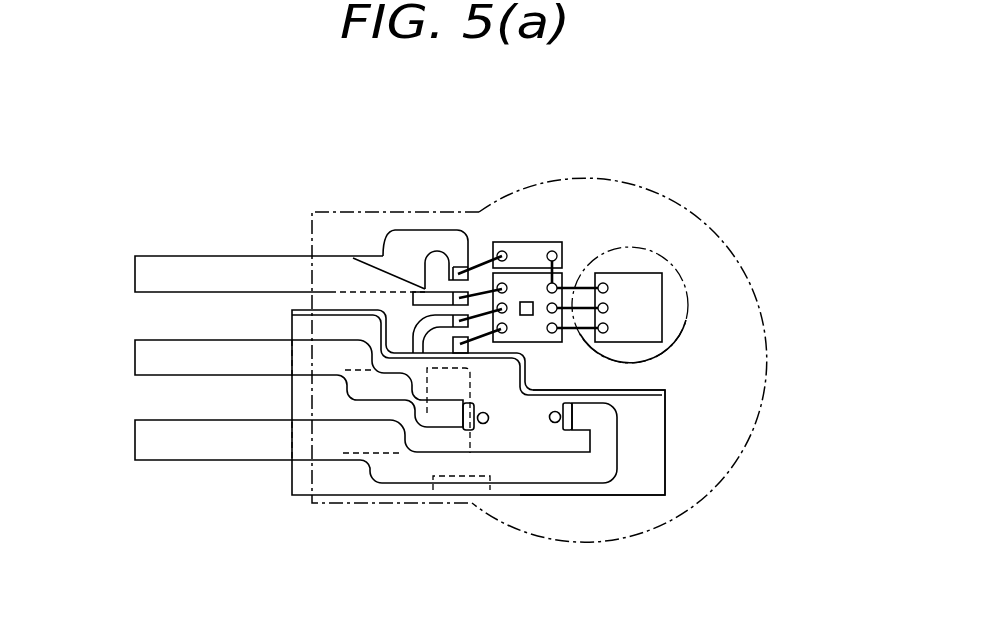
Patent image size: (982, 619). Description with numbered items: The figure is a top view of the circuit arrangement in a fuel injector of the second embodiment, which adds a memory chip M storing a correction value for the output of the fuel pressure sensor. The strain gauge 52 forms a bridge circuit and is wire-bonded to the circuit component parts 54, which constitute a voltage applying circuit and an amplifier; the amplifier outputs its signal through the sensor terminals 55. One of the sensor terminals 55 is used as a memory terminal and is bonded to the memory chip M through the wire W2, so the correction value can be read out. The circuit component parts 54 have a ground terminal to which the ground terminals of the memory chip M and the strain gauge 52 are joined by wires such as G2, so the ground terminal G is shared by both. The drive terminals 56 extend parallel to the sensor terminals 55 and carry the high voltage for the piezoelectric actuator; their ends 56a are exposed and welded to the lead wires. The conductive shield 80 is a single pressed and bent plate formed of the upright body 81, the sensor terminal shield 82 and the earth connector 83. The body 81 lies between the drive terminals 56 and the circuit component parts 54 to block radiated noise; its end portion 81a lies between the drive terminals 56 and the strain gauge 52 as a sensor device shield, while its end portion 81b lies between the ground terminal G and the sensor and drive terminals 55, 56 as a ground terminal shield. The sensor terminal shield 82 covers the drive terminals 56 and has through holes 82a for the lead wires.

The conductive shield 80 is at (290, 491).
The upright body 81 is at (530, 400).
The end portion of body 81a is at (650, 392).
The end portion of body 81b is at (333, 265).
The sensor terminal shield 82 is at (295, 398).
The through holes 82a is at (484, 424).
The earth connector 83 is at (433, 490).
The strain gauge 52 is at (648, 323).
The circuit component parts 54 is at (552, 242).
The sensor terminals 55 is at (423, 322).
The drive terminals 56 is at (135, 357).
The ends of drive terminals 56a is at (462, 422).
The ground terminal G is at (135, 270).
The wire G2 is at (553, 240).
The memory chip M is at (558, 248).
The wire W2 is at (494, 243).